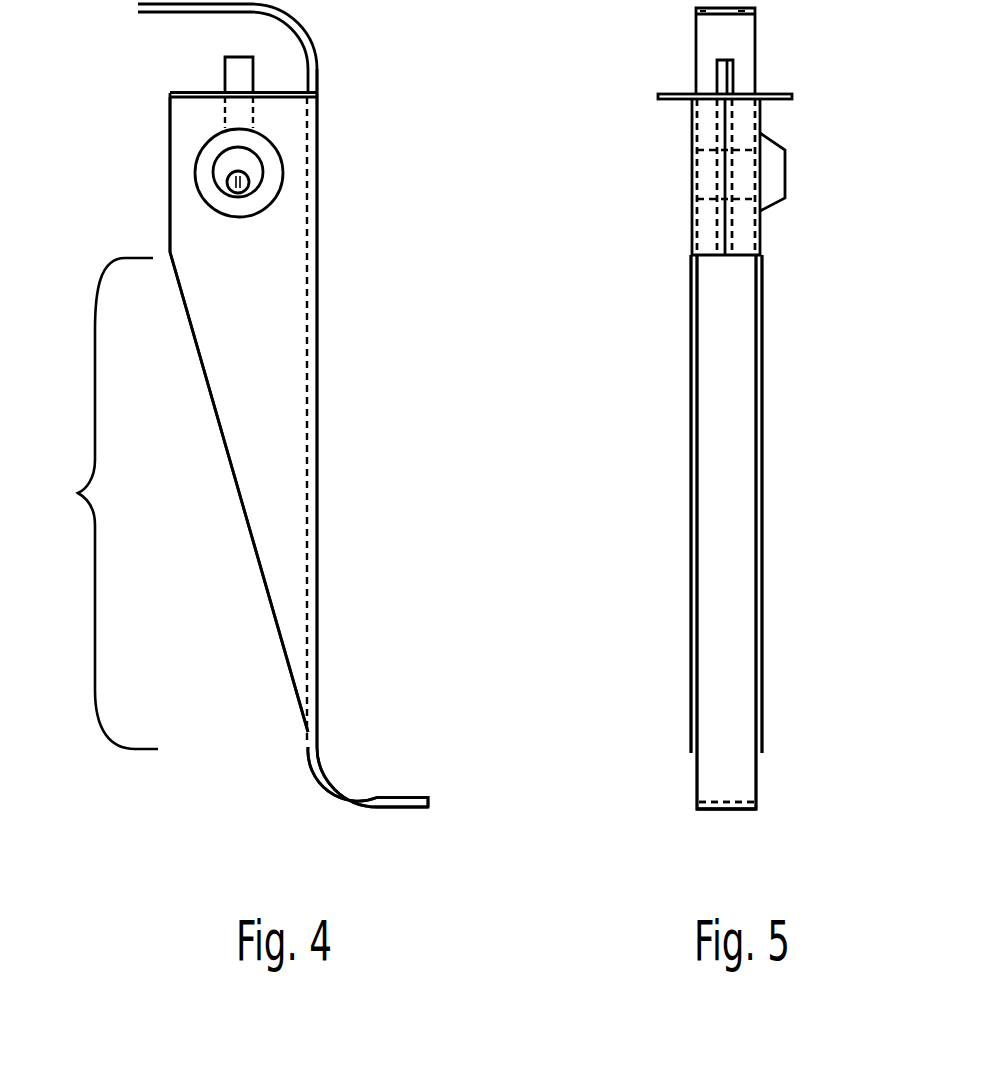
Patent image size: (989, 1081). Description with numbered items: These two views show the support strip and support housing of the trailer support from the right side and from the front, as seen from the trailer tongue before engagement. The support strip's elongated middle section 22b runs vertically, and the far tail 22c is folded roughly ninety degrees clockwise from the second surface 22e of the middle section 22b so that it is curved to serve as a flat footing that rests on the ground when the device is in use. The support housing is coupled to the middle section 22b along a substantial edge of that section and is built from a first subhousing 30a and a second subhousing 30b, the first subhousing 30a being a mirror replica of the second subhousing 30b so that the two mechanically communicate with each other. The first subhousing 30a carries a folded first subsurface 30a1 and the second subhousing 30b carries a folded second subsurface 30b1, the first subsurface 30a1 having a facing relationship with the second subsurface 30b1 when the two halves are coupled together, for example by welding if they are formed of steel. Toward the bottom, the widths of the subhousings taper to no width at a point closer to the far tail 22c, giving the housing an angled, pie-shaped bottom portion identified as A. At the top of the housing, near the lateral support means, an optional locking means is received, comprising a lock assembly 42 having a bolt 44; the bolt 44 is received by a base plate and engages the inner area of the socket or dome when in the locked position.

In FIG. 5, the middle section 22b is at (730, 363).
In FIG. 4, the far tail 22c is at (397, 818).
In FIG. 5, the far tail 22c is at (715, 816).
In FIG. 4, the second surface 22e is at (328, 417).
In FIG. 4, the first subhousing 30a is at (281, 313).
In FIG. 5, the first subhousing 30a is at (769, 401).
In FIG. 5, the first subsurface 30a1 is at (743, 243).
In FIG. 5, the second subhousing 30b is at (683, 403).
In FIG. 5, the second subsurface 30b1 is at (710, 232).
In FIG. 4, the lock assembly 42 is at (257, 168).
In FIG. 5, the lock assembly 42 is at (773, 157).
In FIG. 4, the bolt 44 is at (245, 78).
In FIG. 5, the bolt 44 is at (718, 67).
In FIG. 4, the angled portion A is at (102, 503).